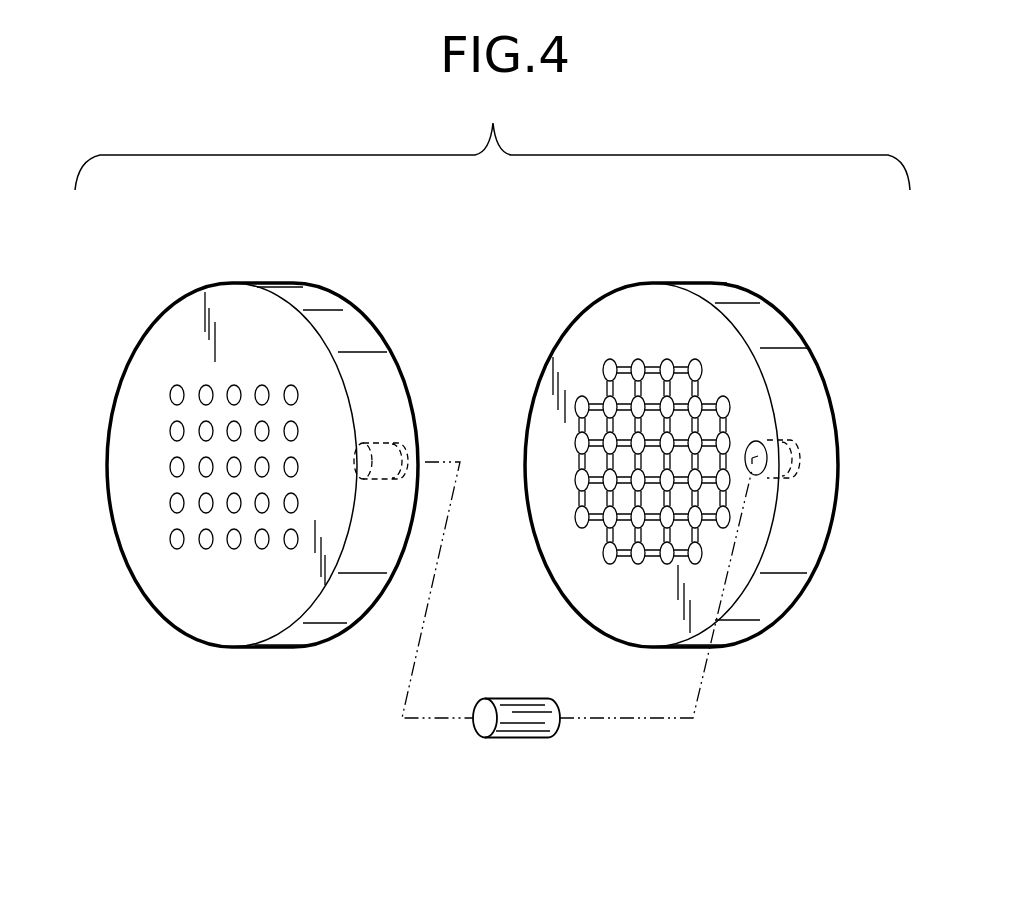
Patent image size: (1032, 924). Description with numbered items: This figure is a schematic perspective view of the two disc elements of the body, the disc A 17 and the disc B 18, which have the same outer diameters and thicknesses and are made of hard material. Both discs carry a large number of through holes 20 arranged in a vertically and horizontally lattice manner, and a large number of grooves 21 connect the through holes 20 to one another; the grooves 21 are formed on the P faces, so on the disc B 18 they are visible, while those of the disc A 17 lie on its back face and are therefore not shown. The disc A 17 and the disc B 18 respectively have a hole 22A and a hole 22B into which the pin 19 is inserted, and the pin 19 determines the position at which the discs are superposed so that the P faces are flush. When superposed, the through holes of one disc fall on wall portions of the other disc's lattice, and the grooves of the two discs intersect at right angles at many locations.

The disc A 17 is at (178, 620).
The disc B 18 is at (767, 613).
The pin 19 is at (522, 728).
The through holes 20 is at (206, 385).
The grooves 21 is at (655, 366).
The hole 22A is at (400, 442).
The hole 22B is at (797, 443).
The P faces P is at (590, 338).